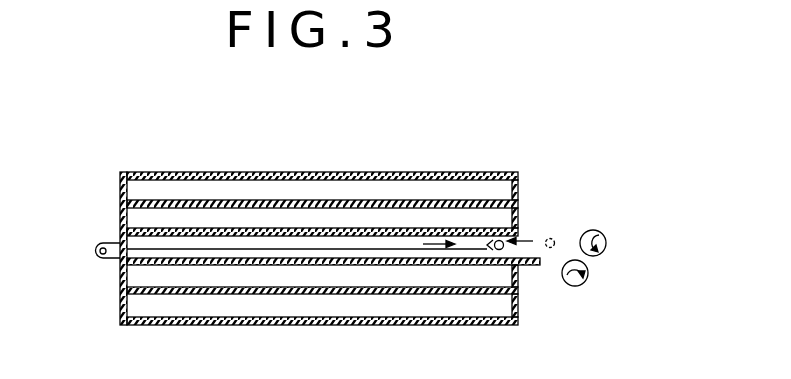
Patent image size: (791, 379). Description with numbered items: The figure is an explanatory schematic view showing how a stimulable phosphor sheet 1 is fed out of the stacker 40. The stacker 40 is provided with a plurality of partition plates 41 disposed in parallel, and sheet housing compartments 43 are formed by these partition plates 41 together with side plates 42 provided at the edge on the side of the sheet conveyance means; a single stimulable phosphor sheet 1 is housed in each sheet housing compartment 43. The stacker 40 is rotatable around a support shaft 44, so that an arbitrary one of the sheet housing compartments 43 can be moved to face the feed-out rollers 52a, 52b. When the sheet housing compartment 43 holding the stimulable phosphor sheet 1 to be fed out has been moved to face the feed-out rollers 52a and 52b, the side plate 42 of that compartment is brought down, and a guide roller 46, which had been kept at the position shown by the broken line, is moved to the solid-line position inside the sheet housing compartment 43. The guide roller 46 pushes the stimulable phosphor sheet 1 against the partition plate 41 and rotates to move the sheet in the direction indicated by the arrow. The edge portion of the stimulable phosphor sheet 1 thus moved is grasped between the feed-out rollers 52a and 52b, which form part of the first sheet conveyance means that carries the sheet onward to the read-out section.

The stacker 40 is at (236, 134).
The sheet housing compartment 43 is at (270, 245).
The stimulable phosphor sheet 1 is at (355, 250).
The support shaft 44 is at (485, 247).
The guide roller 46 is at (499, 234).
The side plate 42 is at (532, 266).
The partition plate 41 is at (377, 266).
The feed-out roller 52a is at (590, 230).
The feed-out roller 52b is at (570, 286).